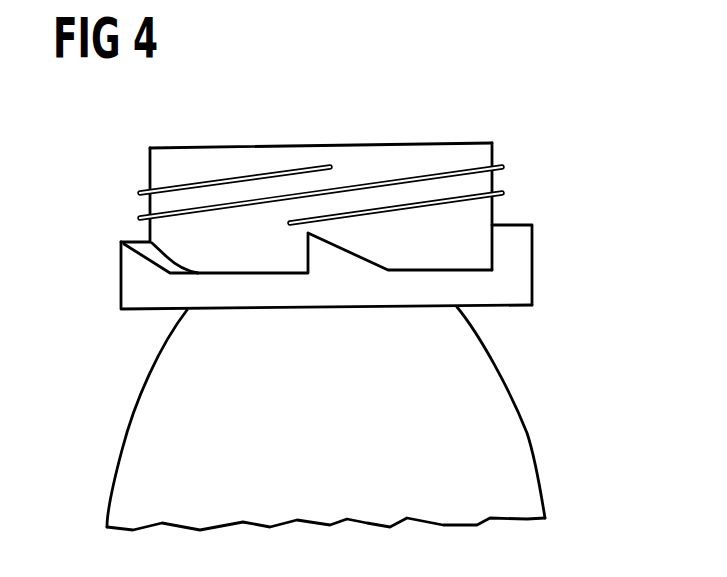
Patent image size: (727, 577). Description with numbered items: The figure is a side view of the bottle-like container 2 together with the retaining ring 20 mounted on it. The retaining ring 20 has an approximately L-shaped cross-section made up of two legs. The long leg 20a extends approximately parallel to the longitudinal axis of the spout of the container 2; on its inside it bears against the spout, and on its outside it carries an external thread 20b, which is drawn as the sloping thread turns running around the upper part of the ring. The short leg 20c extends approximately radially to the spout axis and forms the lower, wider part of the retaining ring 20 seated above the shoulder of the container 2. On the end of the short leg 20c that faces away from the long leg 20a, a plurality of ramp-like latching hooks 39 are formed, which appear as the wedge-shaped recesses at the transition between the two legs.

The container 2 is at (512, 418).
The retaining ring 20 is at (520, 128).
The long leg 20a is at (370, 158).
The external thread 20b is at (220, 180).
The short leg 20c is at (141, 298).
The latching hooks 39 is at (340, 260).